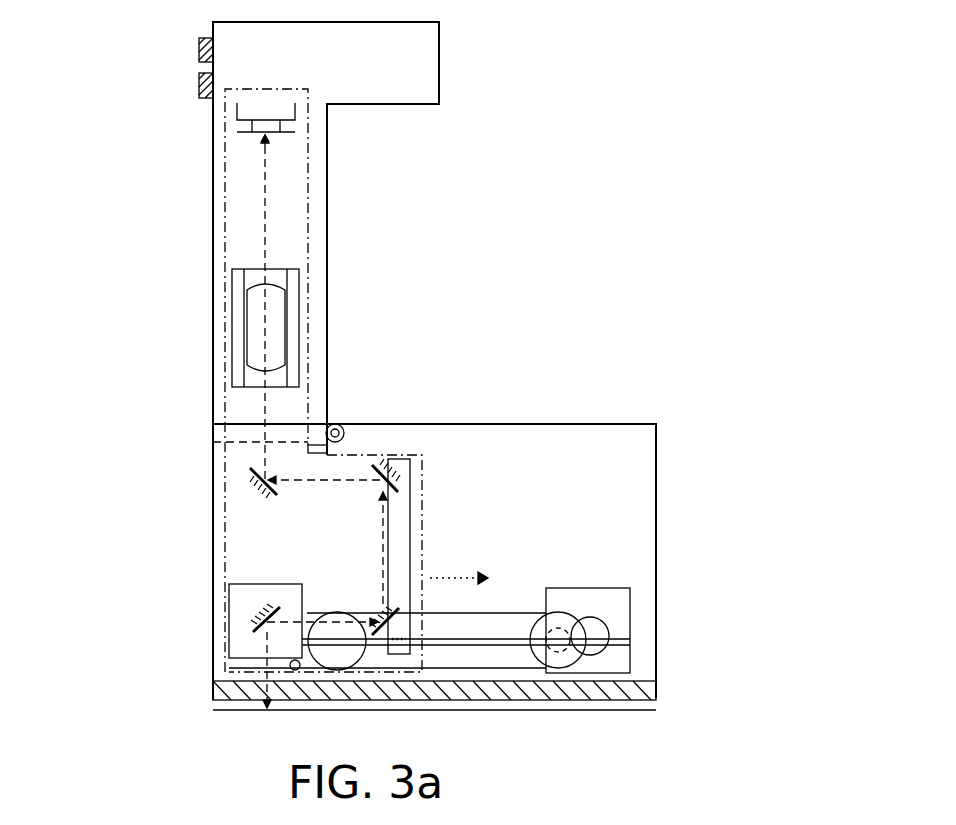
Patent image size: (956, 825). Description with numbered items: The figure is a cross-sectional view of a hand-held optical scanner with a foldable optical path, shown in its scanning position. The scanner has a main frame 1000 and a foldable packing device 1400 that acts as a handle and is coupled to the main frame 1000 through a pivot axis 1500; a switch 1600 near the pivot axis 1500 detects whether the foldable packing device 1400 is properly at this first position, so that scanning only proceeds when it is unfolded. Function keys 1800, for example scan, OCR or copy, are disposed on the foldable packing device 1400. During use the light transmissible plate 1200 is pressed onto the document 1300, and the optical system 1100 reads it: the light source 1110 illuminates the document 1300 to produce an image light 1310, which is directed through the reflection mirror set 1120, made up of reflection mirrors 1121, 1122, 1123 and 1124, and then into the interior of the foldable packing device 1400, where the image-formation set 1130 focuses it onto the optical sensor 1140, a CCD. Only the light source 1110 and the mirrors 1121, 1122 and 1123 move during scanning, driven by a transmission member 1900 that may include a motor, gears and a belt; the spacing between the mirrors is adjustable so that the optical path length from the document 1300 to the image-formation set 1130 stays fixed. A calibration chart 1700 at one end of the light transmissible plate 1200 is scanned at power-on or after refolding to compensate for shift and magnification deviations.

The main frame 1000 is at (656, 535).
The optical system 1100 is at (422, 519).
The light source 1110 is at (213, 662).
The reflection mirror set 1120 is at (78, 462).
The reflection mirror 1121 is at (260, 614).
The reflection mirror 1122 is at (385, 608).
The reflection mirror 1123 is at (372, 478).
The reflection mirror 1124 is at (250, 470).
The image-formation set 1130 is at (237, 305).
The optical sensor 1140 is at (237, 112).
The light transmissible plate 1200 is at (656, 687).
The document 1300 is at (640, 710).
The image light 1310 is at (240, 643).
The foldable packing device 1400 is at (318, 229).
The pivot axis 1500 is at (340, 426).
The switch 1600 is at (327, 445).
The calibration chart 1700 is at (215, 687).
The function keys 1800 is at (200, 83).
The transmission member 1900 is at (613, 610).